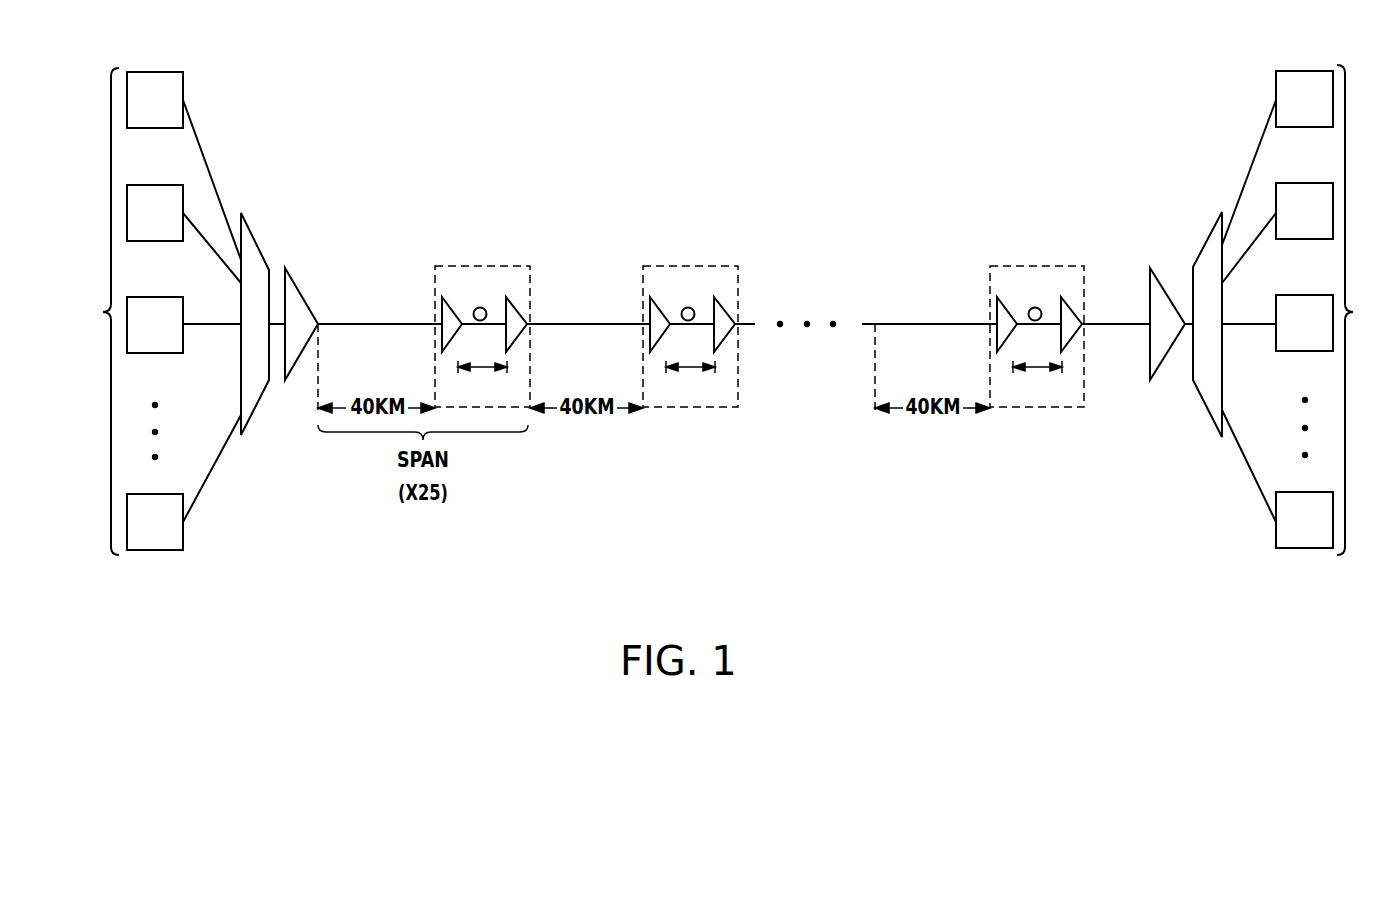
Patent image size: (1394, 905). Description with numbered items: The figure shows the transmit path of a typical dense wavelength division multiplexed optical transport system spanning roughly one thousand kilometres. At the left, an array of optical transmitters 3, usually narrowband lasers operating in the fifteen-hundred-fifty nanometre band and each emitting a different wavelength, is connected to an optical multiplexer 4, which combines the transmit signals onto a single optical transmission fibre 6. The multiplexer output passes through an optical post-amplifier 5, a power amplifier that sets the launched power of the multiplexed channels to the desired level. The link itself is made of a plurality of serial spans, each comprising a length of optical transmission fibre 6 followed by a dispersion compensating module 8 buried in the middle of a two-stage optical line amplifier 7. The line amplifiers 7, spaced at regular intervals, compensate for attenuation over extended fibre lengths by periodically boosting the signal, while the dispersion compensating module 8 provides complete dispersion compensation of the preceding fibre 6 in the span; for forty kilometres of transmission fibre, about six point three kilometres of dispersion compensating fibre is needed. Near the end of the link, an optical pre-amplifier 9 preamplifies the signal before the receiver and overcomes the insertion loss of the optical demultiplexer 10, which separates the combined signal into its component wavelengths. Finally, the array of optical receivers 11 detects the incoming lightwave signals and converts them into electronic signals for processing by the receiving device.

The optical transmitters 3 is at (160, 332).
The optical multiplexer 4 is at (252, 410).
The optical post-amplifier 5 is at (306, 292).
The optical transmission fibre 6 is at (378, 323).
The two-stage optical line amplifier 7 is at (498, 266).
The dispersion compensating module 8 is at (477, 308).
The optical pre-amplifier 9 is at (1163, 281).
The optical demultiplexer 10 is at (1202, 398).
The optical receivers 11 is at (1295, 310).